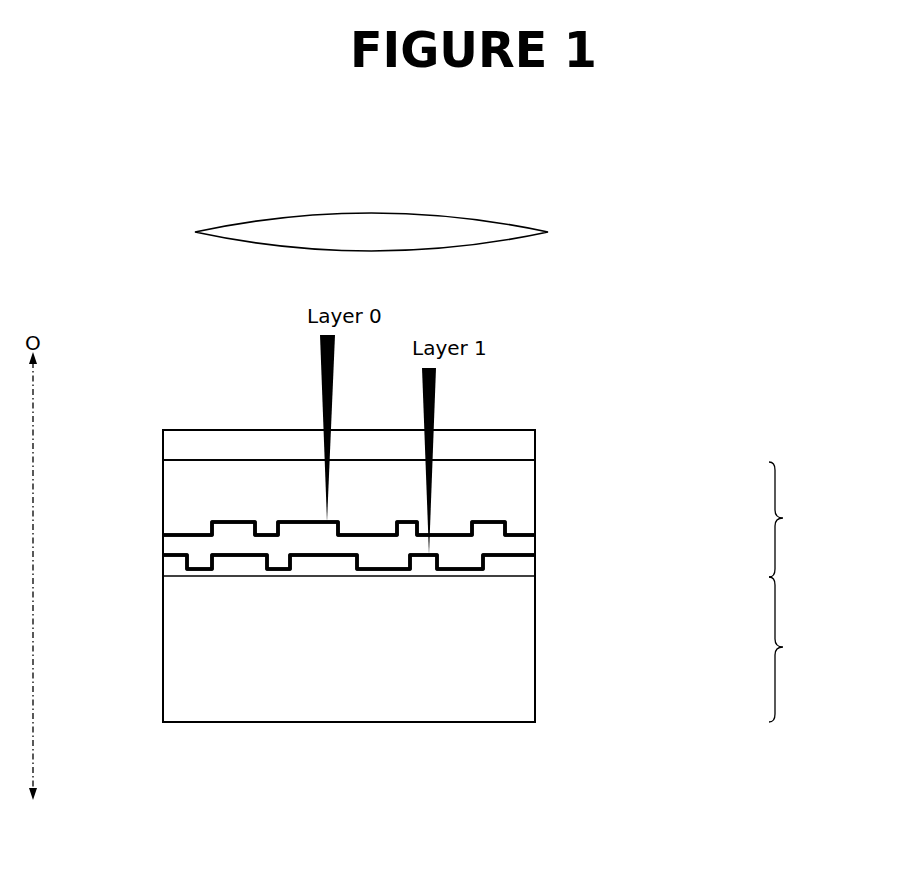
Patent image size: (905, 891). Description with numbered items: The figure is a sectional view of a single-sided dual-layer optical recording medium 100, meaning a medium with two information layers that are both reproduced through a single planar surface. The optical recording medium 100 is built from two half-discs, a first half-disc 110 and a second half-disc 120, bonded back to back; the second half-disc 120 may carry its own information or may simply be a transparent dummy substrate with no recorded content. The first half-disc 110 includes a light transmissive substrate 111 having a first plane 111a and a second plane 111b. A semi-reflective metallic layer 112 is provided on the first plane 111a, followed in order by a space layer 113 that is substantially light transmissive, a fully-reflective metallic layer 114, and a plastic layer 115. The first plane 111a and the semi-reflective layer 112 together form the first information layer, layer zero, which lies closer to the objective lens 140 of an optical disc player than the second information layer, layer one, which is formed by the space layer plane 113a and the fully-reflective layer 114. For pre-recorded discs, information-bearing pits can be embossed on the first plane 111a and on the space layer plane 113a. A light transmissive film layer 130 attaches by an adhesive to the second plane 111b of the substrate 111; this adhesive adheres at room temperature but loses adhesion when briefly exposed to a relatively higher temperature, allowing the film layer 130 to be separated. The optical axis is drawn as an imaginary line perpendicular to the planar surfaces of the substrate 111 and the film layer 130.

The optical recording medium 100 is at (588, 391).
The half-disc 110 is at (803, 519).
The substrate 111 is at (525, 498).
The first plane of substrate 111a is at (524, 533).
The second plane of substrate 111b is at (524, 464).
The semi-reflective layer 112 is at (178, 533).
The space layer 113 is at (180, 545).
The space layer plane 113a is at (469, 562).
The fully-reflective layer 114 is at (180, 555).
The plastic layer 115 is at (503, 567).
The second half-disc 120 is at (803, 649).
The film layer 130 is at (525, 447).
The objective lens 140 is at (518, 232).